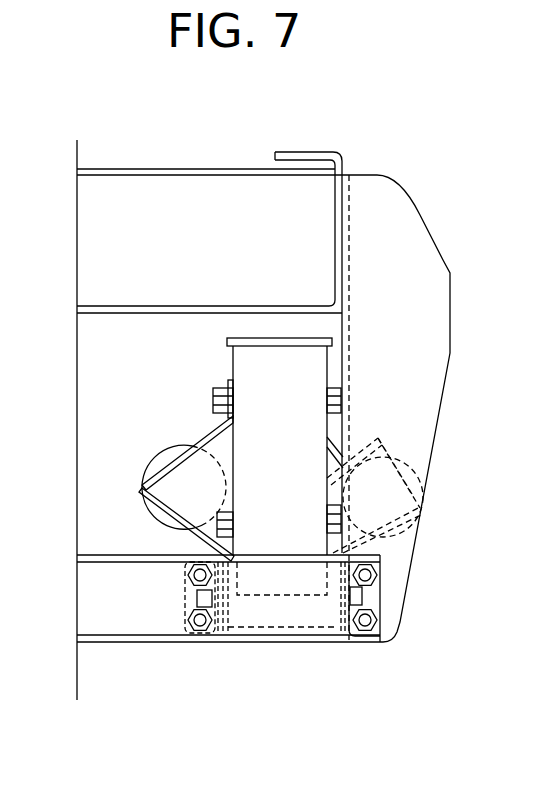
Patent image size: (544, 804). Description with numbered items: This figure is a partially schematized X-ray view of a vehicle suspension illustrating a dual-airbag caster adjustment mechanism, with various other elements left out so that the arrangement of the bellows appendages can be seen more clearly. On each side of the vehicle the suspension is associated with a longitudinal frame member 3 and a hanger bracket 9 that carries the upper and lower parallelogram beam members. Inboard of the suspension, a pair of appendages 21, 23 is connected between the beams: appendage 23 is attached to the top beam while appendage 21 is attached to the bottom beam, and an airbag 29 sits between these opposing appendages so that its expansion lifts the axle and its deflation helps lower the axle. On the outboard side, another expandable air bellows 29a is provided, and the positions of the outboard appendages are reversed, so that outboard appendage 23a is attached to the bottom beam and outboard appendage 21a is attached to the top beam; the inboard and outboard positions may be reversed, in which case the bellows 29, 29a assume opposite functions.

The longitudinal frame member 3 is at (342, 157).
The hanger bracket 9 is at (398, 248).
The appendage 21 is at (212, 534).
The appendage 23 is at (222, 440).
The airbag 29 is at (152, 470).
The outboard appendage 21a is at (397, 483).
The outboard appendage 23a is at (387, 543).
The expandable air bellows 29a is at (405, 518).